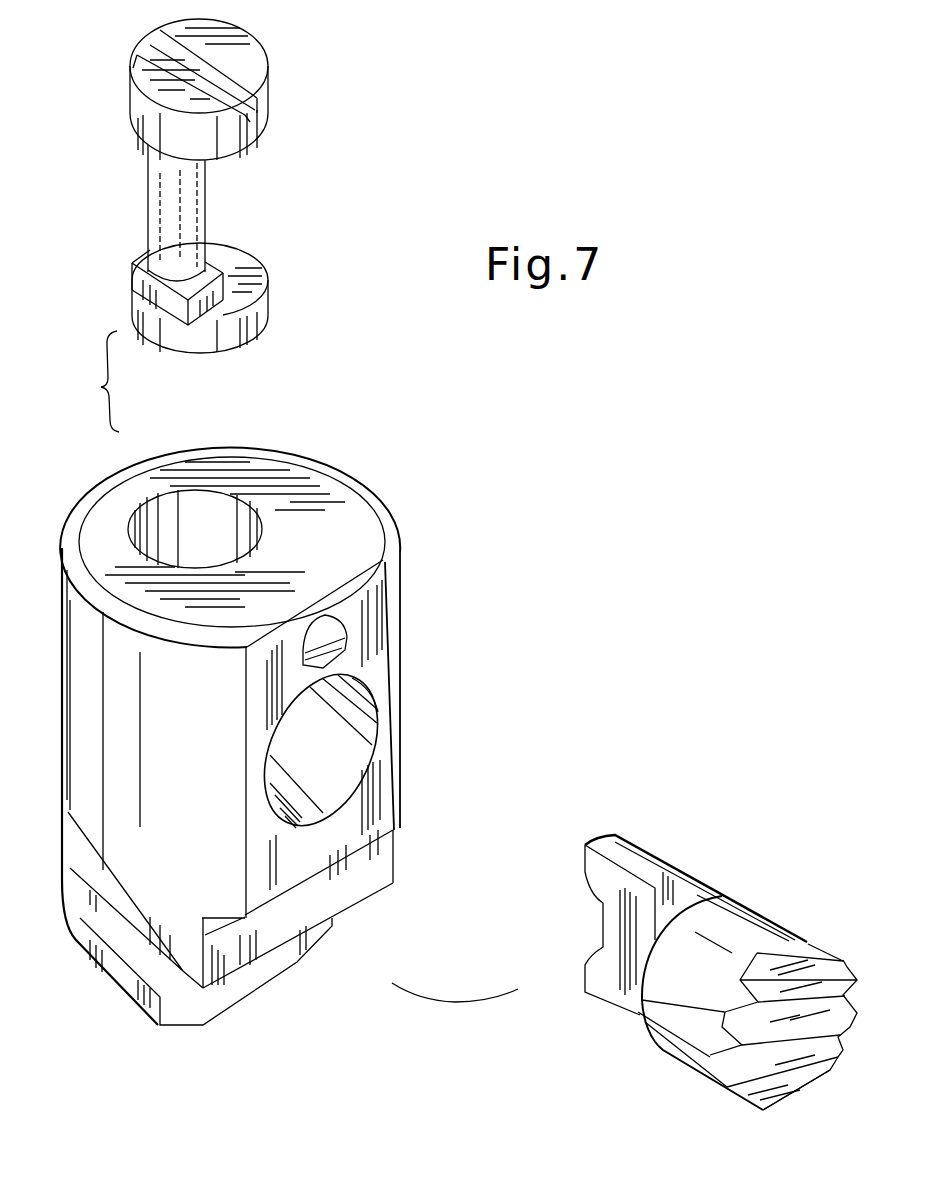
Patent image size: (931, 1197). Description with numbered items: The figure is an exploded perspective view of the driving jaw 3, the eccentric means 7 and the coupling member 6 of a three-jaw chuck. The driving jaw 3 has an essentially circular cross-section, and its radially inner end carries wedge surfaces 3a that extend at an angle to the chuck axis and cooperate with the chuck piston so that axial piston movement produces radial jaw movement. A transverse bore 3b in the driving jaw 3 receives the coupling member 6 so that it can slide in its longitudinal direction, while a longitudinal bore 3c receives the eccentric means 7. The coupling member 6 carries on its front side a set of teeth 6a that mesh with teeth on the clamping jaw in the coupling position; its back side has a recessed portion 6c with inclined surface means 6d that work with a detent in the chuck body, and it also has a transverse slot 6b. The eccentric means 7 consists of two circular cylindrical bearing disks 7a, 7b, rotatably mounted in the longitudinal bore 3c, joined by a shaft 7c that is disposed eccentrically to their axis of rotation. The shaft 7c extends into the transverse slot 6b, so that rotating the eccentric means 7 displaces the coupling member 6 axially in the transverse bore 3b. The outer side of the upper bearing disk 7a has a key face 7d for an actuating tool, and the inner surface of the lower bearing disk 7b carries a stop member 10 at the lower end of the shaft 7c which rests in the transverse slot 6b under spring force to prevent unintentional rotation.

The driving jaw 3 is at (373, 587).
The wedge surfaces 3a is at (117, 957).
The transverse bore 3b is at (310, 817).
The longitudinal bore 3c is at (212, 567).
The coupling member 6 is at (747, 927).
The set of teeth 6a is at (783, 1057).
The transverse slot 6b is at (673, 885).
The recessed portion 6c is at (600, 920).
The inclined surface means 6d is at (586, 880).
The eccentric means 7 is at (216, 209).
The upper bearing disk 7a is at (130, 111).
The lower bearing disk 7b is at (235, 275).
The shaft 7c is at (163, 202).
The key face 7d is at (213, 73).
The stop member 10 is at (140, 275).